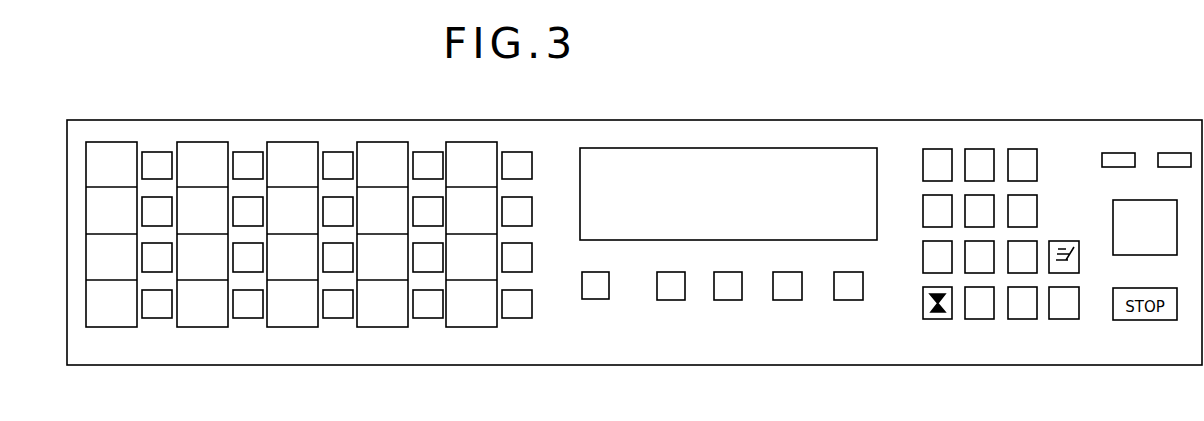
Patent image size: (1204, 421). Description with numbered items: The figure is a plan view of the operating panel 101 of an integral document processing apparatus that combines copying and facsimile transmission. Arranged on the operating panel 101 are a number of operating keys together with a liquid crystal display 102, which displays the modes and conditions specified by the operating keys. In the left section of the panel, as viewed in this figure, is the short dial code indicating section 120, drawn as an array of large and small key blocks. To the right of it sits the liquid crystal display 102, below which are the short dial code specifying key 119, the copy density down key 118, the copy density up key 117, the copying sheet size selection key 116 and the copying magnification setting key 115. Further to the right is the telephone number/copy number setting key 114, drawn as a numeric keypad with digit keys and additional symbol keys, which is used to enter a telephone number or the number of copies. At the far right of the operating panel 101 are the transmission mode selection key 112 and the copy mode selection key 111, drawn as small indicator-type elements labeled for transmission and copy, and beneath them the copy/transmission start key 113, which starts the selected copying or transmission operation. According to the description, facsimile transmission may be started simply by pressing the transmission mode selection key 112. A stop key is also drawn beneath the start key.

The operating panel 101 is at (722, 109).
The liquid crystal display 102 is at (769, 148).
The copy mode selection key 111 is at (1173, 153).
The transmission mode selection key 112 is at (1117, 153).
The copy/transmission start key 113 is at (1113, 210).
The telephone number/copy number setting key 114 is at (983, 140).
The copying magnification setting key 115 is at (845, 275).
The copying sheet size selection key 116 is at (783, 275).
The copy density up key 117 is at (720, 275).
The copy density down key 118 is at (673, 275).
The short dial code specifying key 119 is at (597, 275).
The short dial code indicating section 120 is at (300, 140).